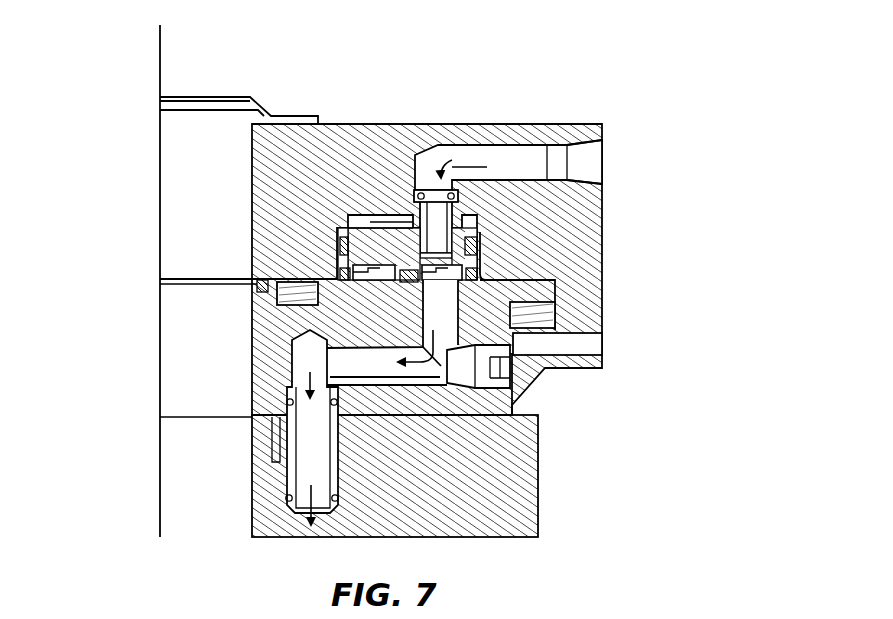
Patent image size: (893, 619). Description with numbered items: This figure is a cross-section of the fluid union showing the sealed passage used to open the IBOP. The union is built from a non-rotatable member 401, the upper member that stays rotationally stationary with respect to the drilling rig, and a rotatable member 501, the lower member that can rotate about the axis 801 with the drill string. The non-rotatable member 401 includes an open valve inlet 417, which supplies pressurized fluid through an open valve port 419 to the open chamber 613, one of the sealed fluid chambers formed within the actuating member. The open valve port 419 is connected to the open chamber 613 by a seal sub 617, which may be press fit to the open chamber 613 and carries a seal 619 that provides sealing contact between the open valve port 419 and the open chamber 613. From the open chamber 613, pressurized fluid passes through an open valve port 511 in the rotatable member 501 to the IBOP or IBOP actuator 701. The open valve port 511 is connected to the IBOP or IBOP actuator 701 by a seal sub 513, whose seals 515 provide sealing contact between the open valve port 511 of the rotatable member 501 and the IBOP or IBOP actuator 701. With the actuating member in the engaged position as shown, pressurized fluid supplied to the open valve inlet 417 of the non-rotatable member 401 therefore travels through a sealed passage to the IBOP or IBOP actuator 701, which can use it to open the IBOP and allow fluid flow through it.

The axis 801 is at (160, 62).
The non-rotatable member 401 is at (262, 165).
The open valve inlet 417 is at (600, 160).
The open valve port 419 is at (512, 150).
The seal sub 617 is at (420, 245).
The seal 619 is at (460, 198).
The open chamber 613 is at (432, 281).
The open valve port 511 is at (318, 382).
The seal sub 513 is at (292, 478).
The seals 515 is at (287, 400).
The rotatable member 501 is at (495, 415).
The IBOP or IBOP actuator 701 is at (530, 465).